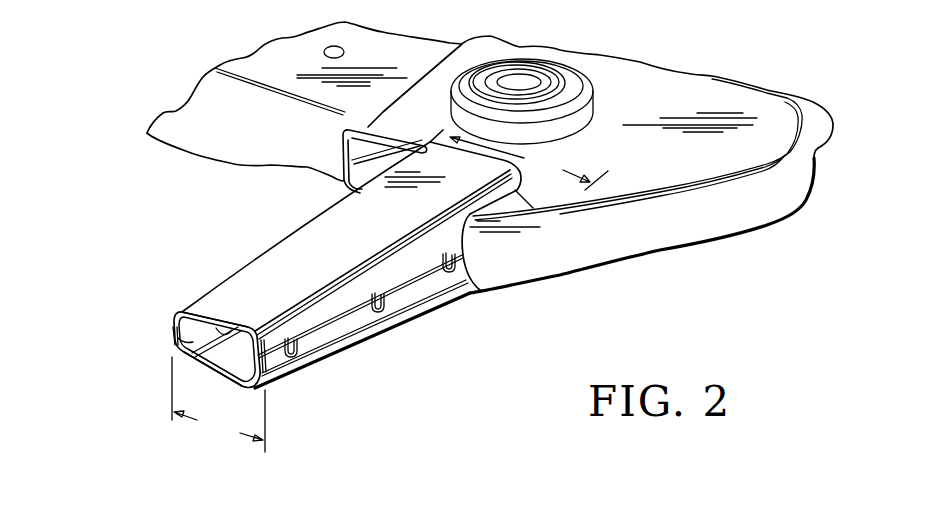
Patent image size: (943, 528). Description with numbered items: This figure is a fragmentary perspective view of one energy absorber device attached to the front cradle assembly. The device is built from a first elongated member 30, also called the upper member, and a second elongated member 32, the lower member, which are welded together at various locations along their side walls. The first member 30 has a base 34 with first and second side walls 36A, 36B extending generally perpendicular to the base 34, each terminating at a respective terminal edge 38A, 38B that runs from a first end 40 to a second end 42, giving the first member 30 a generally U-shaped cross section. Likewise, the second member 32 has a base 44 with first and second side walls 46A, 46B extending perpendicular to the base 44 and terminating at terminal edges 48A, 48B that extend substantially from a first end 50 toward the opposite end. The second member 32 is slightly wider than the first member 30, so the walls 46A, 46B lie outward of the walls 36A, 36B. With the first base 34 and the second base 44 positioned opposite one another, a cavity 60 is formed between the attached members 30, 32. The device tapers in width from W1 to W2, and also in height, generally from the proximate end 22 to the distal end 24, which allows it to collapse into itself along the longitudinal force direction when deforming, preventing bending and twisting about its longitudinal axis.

The proximate end 22 is at (530, 174).
The distal end 24 is at (292, 304).
The first elongated member 30 is at (293, 253).
The second elongated member 32 is at (450, 304).
The base 34 is at (355, 233).
The first side wall 36A is at (210, 295).
The second side wall 36B is at (385, 322).
The terminal edge 38A is at (188, 341).
The terminal edge 38B is at (262, 393).
The first end 40 is at (242, 323).
The second end 42 is at (228, 135).
The base 44 is at (232, 358).
The first side wall 46A is at (175, 355).
The second side wall 46B is at (332, 362).
The terminal edge 48A is at (174, 330).
The terminal edge 48B is at (277, 358).
The first end 50 is at (212, 365).
The cavity 60 is at (213, 328).
The width at proximate end W1 is at (529, 163).
The width at distal end W2 is at (218, 404).